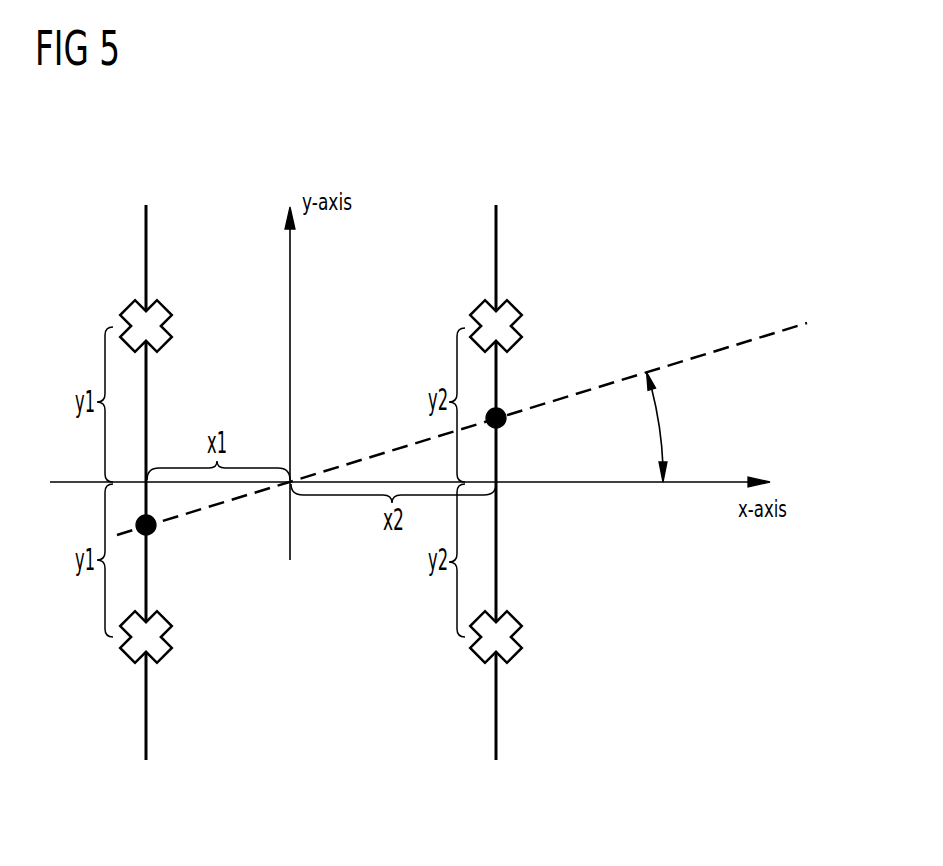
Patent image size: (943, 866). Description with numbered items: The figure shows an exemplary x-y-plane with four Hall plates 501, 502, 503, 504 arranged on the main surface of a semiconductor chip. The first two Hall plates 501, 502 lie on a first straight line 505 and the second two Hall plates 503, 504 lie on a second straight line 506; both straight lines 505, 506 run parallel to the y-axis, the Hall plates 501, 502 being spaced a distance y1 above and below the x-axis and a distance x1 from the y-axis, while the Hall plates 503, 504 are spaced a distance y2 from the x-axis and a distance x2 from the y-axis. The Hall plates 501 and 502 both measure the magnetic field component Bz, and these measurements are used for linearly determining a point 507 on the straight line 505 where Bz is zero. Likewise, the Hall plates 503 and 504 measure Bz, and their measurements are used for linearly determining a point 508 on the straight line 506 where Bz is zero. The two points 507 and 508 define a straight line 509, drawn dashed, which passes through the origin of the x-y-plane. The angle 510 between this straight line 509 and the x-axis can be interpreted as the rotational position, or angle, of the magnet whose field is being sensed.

The Hall plate 501 is at (128, 308).
The Hall plate 502 is at (165, 632).
The Hall plate 503 is at (478, 308).
The Hall plate 504 is at (515, 632).
The straight line 505 is at (146, 732).
The straight line 506 is at (496, 732).
The point 507 is at (153, 531).
The point 508 is at (504, 421).
The straight line 509 is at (797, 328).
The angle 510 is at (662, 428).